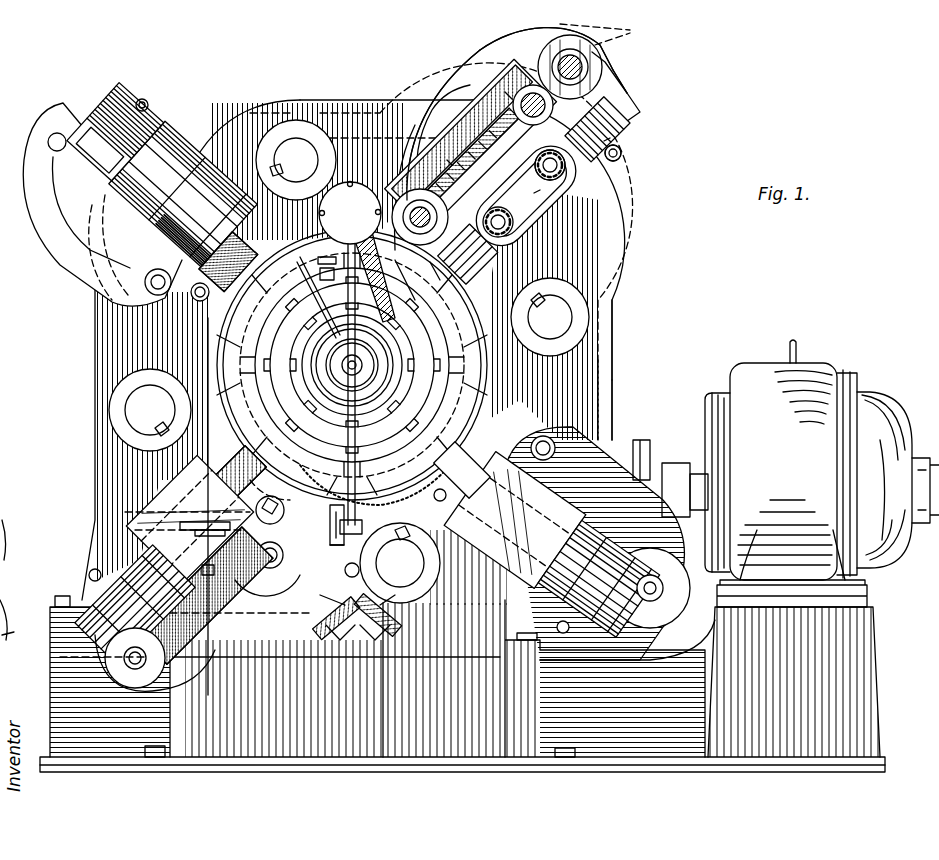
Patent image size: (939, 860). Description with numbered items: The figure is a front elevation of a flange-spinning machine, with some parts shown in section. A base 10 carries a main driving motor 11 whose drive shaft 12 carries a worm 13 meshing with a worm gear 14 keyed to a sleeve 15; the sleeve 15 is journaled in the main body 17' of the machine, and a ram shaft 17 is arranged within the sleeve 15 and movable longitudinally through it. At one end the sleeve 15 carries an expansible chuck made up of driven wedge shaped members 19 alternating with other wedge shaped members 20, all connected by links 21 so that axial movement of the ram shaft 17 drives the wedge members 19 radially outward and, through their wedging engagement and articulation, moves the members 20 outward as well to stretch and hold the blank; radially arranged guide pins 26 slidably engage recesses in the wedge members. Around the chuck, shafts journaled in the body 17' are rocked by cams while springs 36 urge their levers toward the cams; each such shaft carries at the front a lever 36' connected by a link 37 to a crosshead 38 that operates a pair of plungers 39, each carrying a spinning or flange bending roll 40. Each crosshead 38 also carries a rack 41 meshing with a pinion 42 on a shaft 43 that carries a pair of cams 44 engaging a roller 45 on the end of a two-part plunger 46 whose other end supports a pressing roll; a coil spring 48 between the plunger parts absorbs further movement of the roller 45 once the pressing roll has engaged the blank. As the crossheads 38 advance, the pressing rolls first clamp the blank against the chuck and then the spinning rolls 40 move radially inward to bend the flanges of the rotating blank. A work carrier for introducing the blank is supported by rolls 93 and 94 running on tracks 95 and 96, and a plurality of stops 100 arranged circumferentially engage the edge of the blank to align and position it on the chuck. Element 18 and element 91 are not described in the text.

The base 10 is at (62, 675).
The main driving motor 11 is at (822, 473).
The drive shaft 12 is at (674, 465).
The worm 13 is at (600, 406).
The worm gear 14 is at (588, 386).
The sleeve 15 is at (366, 277).
The ram shaft 17 is at (352, 286).
The main body 17' is at (630, 294).
The cover plate 18 is at (438, 143).
The driven wedge shaped members 19 is at (441, 270).
The wedge shaped members 20 is at (408, 271).
The links 21 is at (318, 256).
The guide pins 26 is at (348, 287).
The spring 36 is at (174, 573).
The lever 36' is at (356, 342).
The link 37 is at (534, 193).
The crosshead 38 is at (604, 141).
The plungers 39 is at (594, 177).
The spinning or flange bending roll 40 is at (215, 470).
The rack 41 is at (616, 70).
The pinion 42 is at (619, 33).
The shaft 43 is at (571, 62).
The cams 44 is at (542, 58).
The roller 45 is at (508, 92).
The plunger 46 is at (448, 160).
The coil spring 48 is at (550, 148).
The bracket 91 is at (354, 525).
The rolls 93 is at (400, 563).
The rolls 94 is at (378, 640).
The track 95 is at (352, 572).
The track 96 is at (382, 578).
The stops 100 is at (350, 224).